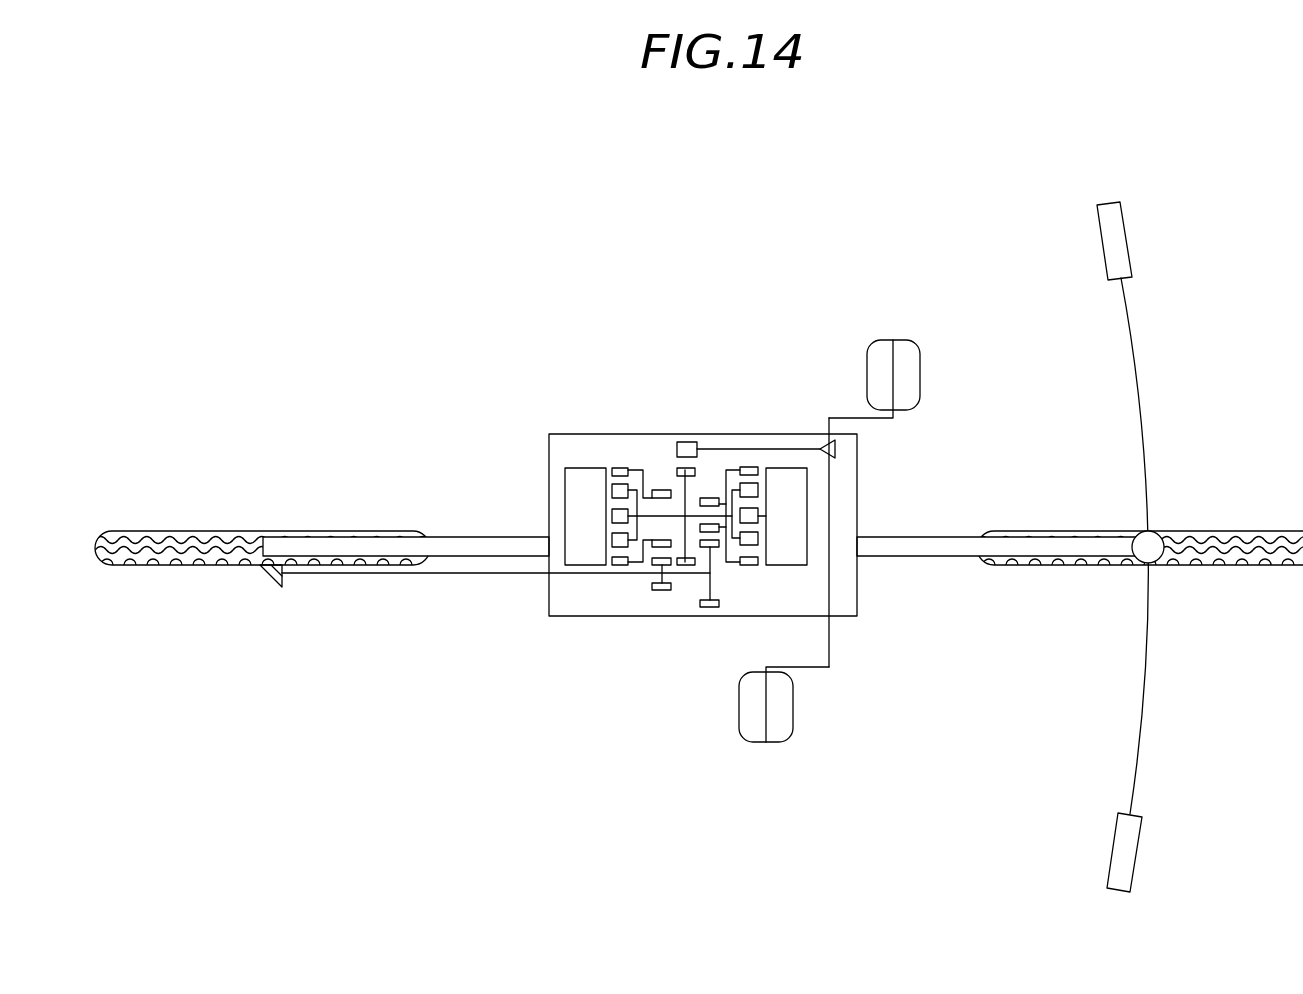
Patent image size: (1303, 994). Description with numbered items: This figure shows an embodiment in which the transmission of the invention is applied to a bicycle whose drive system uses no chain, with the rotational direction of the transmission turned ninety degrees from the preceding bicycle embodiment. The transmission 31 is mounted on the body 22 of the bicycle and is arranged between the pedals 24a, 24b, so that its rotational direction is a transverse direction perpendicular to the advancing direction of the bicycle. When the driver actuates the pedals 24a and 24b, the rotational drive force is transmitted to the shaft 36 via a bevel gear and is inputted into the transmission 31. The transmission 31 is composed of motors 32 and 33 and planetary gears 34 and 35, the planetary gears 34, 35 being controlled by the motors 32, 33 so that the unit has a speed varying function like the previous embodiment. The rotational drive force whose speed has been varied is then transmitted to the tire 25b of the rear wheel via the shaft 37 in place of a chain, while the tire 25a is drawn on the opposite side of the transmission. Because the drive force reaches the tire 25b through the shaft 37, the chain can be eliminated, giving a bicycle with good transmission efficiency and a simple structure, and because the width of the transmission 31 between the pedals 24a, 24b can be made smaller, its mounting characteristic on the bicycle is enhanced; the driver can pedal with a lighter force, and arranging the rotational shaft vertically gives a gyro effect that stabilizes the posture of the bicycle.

The body 22 is at (480, 537).
The pedal 24a is at (910, 340).
The pedal 24b is at (793, 715).
The tire 25a is at (1193, 530).
The tire 25b is at (213, 530).
The transmission 31 is at (857, 592).
The motor 32 is at (785, 566).
The motor 33 is at (573, 468).
The planetary gear 34 is at (742, 566).
The planetary gear 35 is at (618, 468).
The shaft 36 is at (723, 455).
The shaft 37 is at (533, 574).